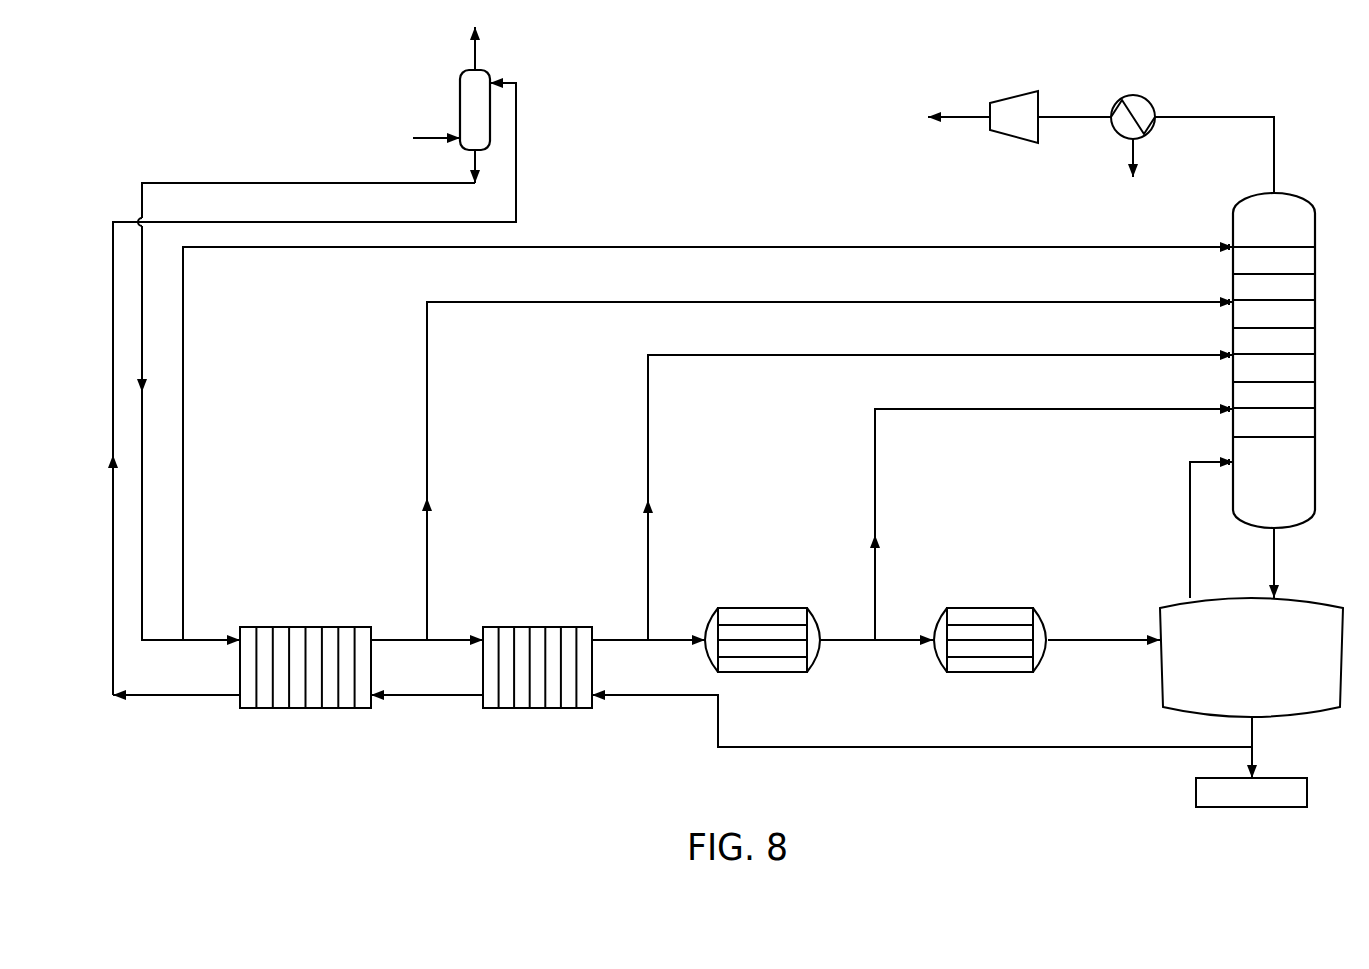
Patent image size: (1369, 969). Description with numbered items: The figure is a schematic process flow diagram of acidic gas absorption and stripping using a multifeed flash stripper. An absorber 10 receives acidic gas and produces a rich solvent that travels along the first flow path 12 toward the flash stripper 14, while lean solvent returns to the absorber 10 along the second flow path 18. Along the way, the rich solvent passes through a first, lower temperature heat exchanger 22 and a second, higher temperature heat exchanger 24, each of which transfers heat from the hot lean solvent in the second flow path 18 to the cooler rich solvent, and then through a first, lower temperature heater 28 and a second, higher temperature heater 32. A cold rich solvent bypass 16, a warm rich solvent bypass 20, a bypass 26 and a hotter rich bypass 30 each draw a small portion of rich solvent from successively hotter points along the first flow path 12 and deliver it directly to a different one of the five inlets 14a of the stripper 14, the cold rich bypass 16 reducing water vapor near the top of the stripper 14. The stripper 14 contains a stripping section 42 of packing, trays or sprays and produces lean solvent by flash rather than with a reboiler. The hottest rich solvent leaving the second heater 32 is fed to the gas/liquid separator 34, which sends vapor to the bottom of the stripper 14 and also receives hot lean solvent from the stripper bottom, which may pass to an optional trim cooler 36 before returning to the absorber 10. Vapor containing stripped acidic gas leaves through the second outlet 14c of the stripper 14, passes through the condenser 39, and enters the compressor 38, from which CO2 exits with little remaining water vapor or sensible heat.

The absorber 10 is at (470, 96).
The first flow path 12 is at (410, 183).
The flash stripper 14 is at (1296, 288).
The inlet 14a is at (1231, 245).
The second outlet 14c is at (1276, 191).
The cold rich solvent bypass 16 is at (185, 345).
The second flow path 18 is at (518, 142).
The warm rich solvent bypass 20 is at (428, 373).
The first heat exchanger 22 is at (347, 710).
The second heat exchanger 24 is at (572, 710).
The bypass 26 is at (649, 428).
The heater 28 is at (745, 673).
The hotter rich bypass 30 is at (877, 495).
The second heater 32 is at (985, 673).
The gas/liquid separator 34 is at (1283, 718).
The trim cooler 36 is at (1196, 789).
The compressor 38 is at (1005, 101).
The condenser 39 is at (1130, 94).
The stripping section 42 is at (1290, 369).